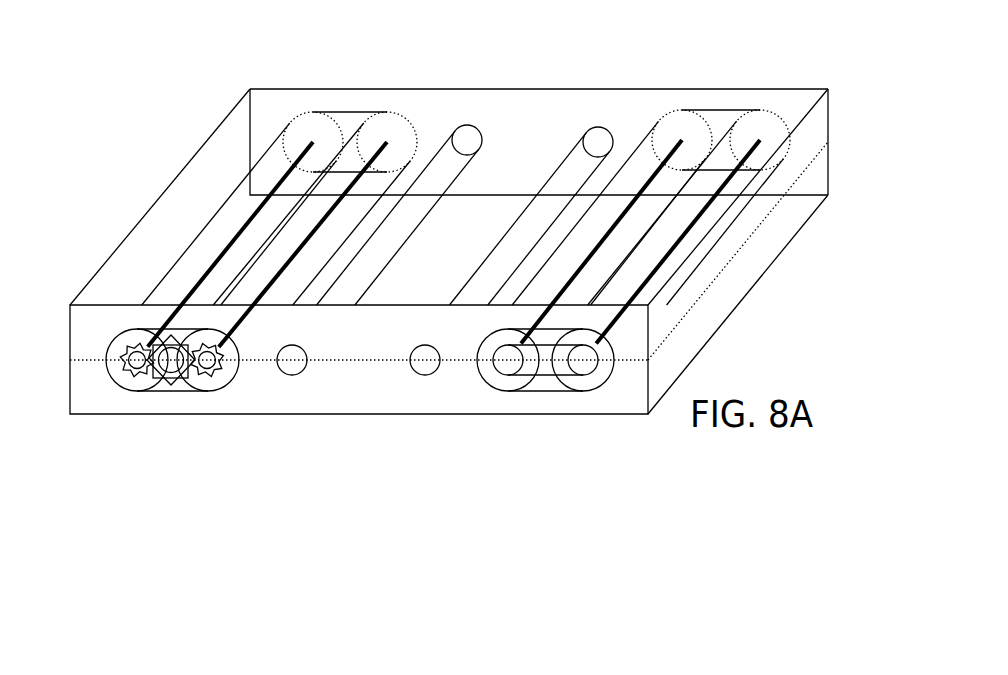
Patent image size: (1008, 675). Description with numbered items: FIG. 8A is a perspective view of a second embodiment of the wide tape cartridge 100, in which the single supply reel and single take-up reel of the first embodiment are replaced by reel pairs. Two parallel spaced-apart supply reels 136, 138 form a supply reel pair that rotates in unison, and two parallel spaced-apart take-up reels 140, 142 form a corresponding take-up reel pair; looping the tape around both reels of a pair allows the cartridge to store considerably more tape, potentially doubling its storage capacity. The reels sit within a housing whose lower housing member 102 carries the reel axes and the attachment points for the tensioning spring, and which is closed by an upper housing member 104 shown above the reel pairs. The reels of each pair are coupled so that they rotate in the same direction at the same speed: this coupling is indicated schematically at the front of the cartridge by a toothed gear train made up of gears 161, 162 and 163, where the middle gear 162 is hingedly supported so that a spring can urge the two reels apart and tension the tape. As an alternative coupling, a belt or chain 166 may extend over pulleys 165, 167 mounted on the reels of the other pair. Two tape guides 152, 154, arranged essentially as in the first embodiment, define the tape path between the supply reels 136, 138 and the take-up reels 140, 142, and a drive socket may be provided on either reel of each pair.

The fiber optic connector assembly 100 is at (228, 527).
The lower housing member 102 is at (785, 227).
The cover plate 104 is at (820, 130).
The supply reel 136 is at (318, 123).
The supply reel 138 is at (400, 123).
The take-up reel 140 is at (678, 117).
The take-up reel 142 is at (767, 117).
The tape guide 152 is at (467, 140).
The tape guide 154 is at (598, 142).
The gear 161 is at (132, 367).
The gear 162 is at (170, 364).
The gear 163 is at (207, 367).
The pulley 165 is at (497, 372).
The belt or chain 166 is at (545, 378).
The pulley 167 is at (578, 375).